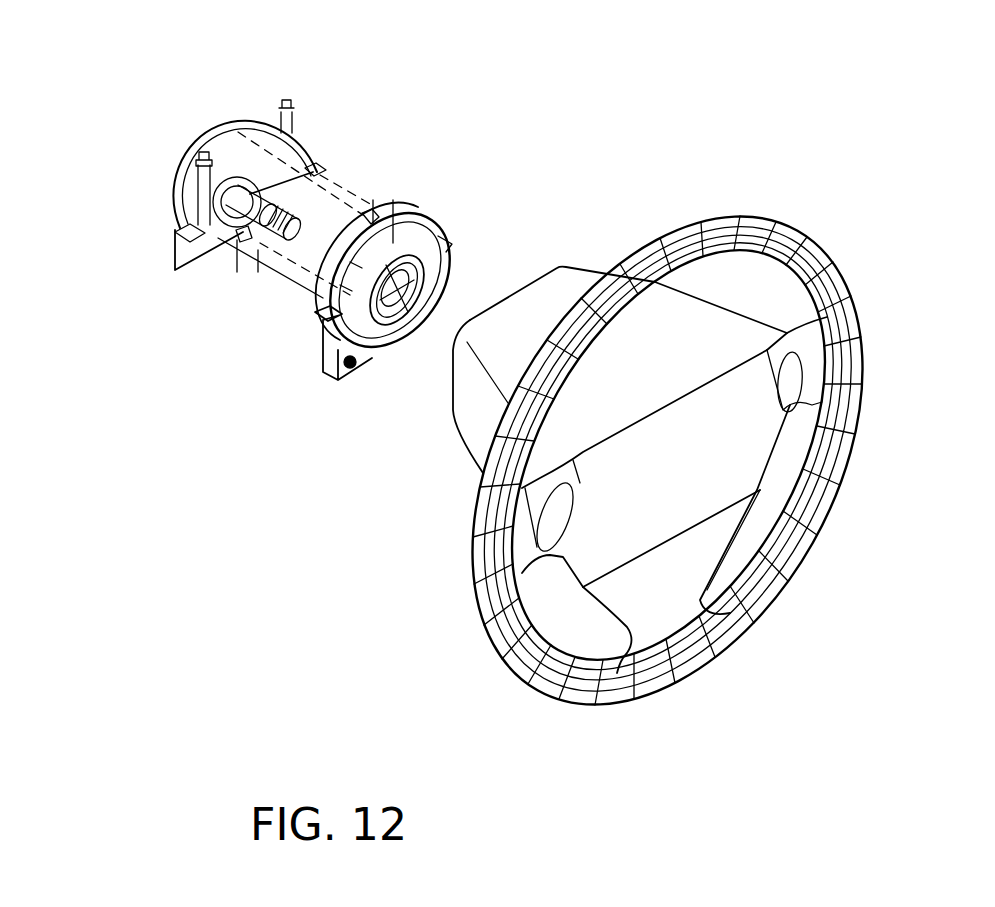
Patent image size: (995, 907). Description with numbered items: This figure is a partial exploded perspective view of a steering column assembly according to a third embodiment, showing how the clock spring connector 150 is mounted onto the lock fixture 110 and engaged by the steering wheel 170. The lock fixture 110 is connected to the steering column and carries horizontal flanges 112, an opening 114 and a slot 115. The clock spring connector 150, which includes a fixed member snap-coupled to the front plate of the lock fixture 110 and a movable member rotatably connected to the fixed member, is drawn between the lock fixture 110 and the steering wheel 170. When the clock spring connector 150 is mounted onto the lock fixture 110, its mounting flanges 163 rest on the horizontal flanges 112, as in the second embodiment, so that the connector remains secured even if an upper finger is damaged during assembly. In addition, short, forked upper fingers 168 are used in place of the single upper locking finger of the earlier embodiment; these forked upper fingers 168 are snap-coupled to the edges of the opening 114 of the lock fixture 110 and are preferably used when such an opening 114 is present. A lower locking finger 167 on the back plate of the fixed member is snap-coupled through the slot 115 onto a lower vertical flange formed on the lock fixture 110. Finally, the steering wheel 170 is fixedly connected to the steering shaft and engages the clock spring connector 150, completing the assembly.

The lock fixture 110 is at (240, 185).
The horizontal flanges 112 is at (178, 234).
The opening 114 is at (258, 120).
The slot 115 is at (242, 245).
The clock spring connector 150 is at (363, 349).
The mounting flanges 163 is at (430, 320).
The lower locking finger 167 is at (365, 368).
The forked upper fingers 168 is at (378, 212).
The steering wheel 170 is at (705, 213).